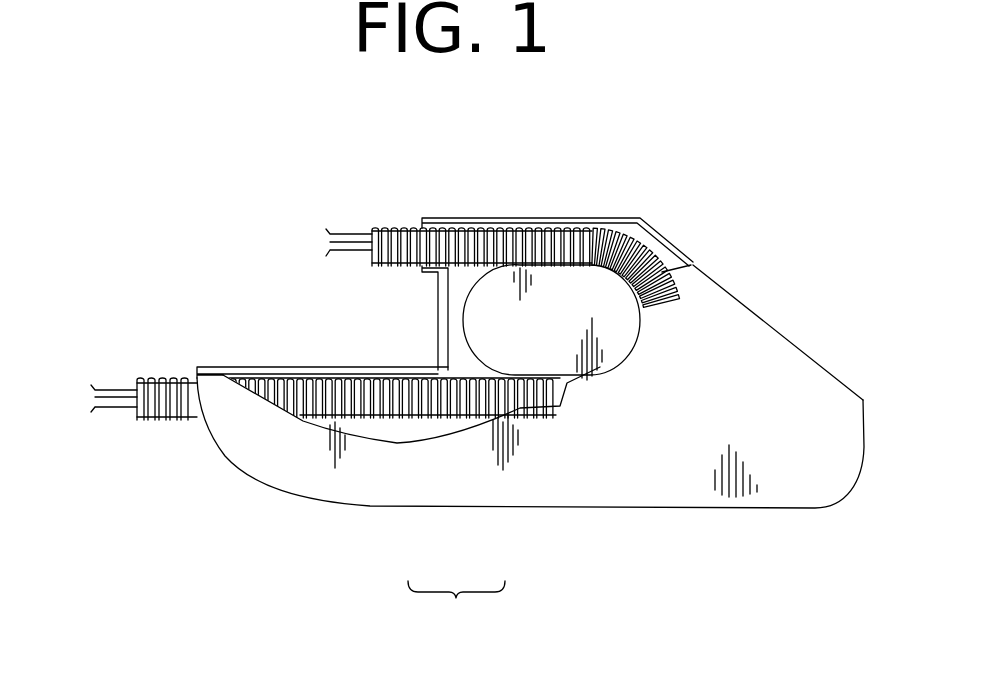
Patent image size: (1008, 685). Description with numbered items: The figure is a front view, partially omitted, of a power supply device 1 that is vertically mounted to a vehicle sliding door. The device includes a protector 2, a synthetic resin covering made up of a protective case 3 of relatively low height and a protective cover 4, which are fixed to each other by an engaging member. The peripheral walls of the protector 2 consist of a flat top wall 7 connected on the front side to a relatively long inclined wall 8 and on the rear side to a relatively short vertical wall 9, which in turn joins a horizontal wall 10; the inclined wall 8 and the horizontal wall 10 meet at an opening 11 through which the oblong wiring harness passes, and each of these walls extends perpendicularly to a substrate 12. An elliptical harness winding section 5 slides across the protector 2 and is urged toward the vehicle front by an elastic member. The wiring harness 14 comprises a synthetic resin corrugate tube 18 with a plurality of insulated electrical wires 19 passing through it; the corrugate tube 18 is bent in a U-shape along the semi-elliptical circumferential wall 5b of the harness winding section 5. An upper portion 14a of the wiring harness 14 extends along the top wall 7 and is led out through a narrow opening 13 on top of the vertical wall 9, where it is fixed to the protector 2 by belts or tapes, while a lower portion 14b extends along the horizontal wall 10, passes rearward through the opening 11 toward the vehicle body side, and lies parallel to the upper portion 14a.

The power supply device 1 is at (186, 233).
The protector 2 is at (456, 611).
The protective case 3 is at (402, 431).
The protective cover 4 is at (541, 487).
The harness winding section 5 is at (463, 322).
The semi-elliptical circumferential wall 5b is at (640, 327).
The top wall 7 is at (553, 218).
The inclined wall 8 is at (677, 263).
The vertical wall 9 is at (437, 297).
The horizontal wall 10 is at (290, 365).
The opening 11 is at (600, 513).
The substrate 12 is at (463, 277).
The opening 13 is at (420, 227).
The wiring harness 14 is at (172, 438).
The upper portion 14a is at (508, 227).
The lower portion 14b is at (180, 420).
The corrugate tube 18 is at (137, 378).
The insulated electrical wires 19 is at (117, 420).